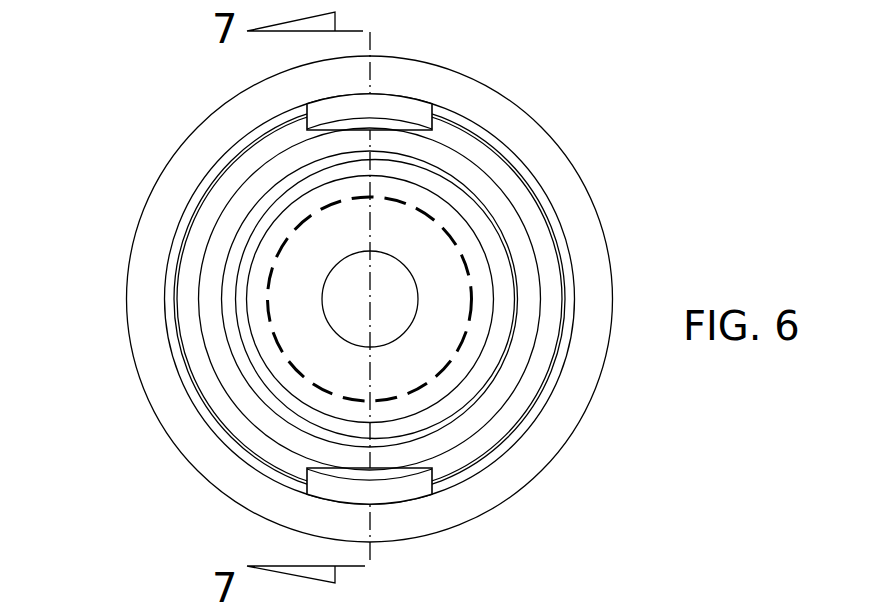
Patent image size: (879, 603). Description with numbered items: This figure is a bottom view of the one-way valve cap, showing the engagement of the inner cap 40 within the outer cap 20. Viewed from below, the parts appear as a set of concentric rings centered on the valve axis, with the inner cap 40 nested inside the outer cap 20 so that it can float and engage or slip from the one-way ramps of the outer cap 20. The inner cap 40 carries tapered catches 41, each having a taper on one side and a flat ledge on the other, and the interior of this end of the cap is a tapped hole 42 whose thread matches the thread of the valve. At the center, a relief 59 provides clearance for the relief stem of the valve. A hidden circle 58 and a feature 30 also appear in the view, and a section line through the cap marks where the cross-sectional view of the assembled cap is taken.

The outer cap 20 is at (127, 268).
The retaining ring with tabs 30 is at (304, 470).
The inner cap 40 is at (478, 432).
The tapered catches 41 is at (204, 190).
The tapped hole 42 is at (440, 165).
The bore (hidden) 58 is at (452, 364).
The relief 59 is at (410, 270).